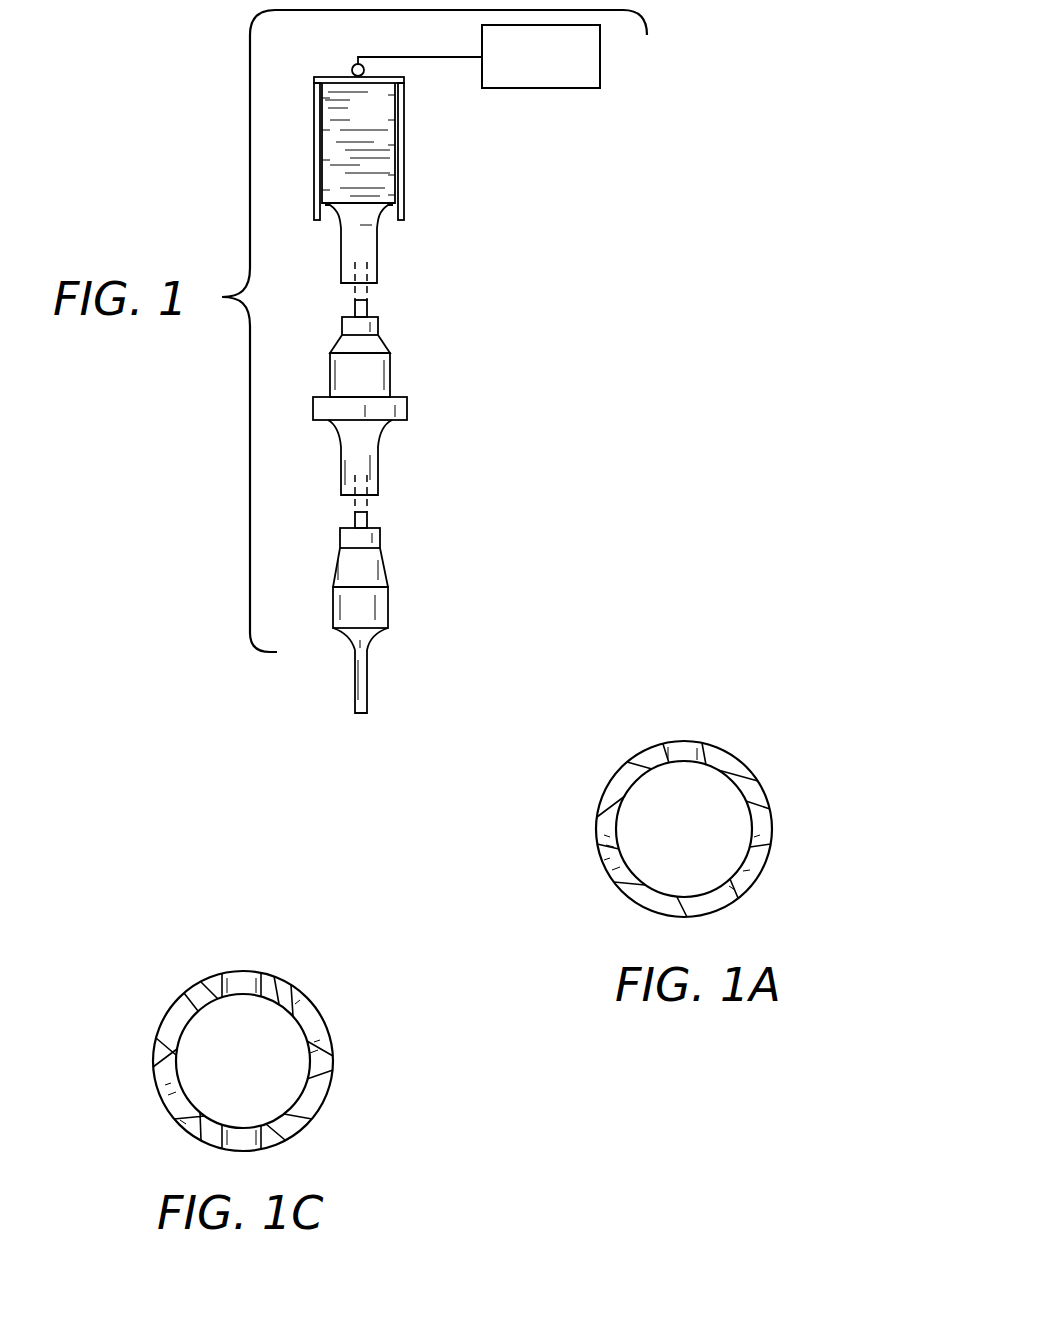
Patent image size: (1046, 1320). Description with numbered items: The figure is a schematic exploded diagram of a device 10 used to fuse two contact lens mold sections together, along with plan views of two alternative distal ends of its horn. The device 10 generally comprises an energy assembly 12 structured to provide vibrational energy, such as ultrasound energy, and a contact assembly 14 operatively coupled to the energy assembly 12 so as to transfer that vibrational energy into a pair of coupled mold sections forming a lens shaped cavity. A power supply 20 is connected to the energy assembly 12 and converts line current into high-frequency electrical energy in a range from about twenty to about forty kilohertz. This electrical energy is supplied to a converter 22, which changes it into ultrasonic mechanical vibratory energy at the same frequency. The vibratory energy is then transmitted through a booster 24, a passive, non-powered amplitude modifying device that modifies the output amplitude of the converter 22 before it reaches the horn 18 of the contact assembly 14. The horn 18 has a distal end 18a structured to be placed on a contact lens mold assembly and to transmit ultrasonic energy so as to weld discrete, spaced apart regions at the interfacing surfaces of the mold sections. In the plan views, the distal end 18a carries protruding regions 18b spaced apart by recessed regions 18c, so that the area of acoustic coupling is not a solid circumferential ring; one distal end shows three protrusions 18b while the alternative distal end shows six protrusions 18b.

In FIG. 1, the device 10 is at (620, 171).
In FIG. 1, the energy assembly 12 is at (432, 294).
In FIG. 1, the contact assembly 14 is at (405, 566).
In FIG. 1, the horn 18 is at (359, 713).
In FIG. 1A, the horn 18 is at (790, 738).
In FIG. 1A, the distal end 18a is at (772, 782).
In FIG. 1A, the protruding regions 18b is at (689, 748).
In FIG. 1A, the recessed regions 18c is at (765, 822).
In FIG. 1, the power supply 20 is at (552, 71).
In FIG. 1, the converter 22 is at (412, 204).
In FIG. 1, the booster 24 is at (404, 456).